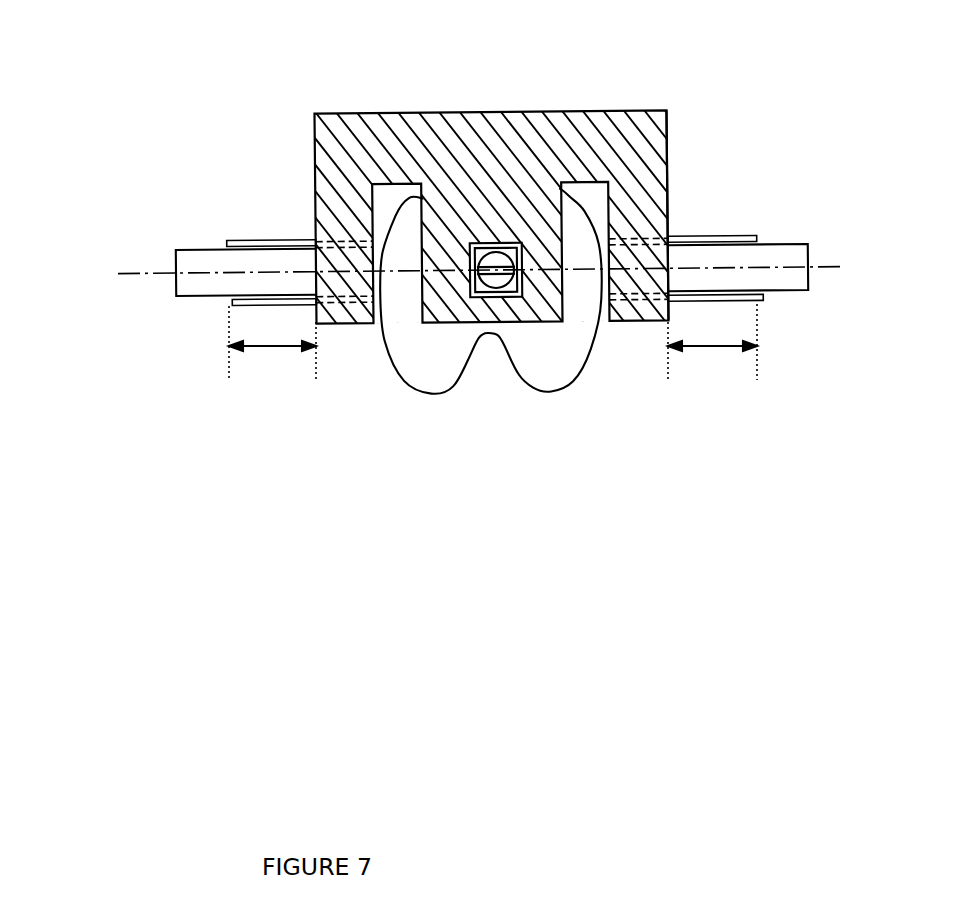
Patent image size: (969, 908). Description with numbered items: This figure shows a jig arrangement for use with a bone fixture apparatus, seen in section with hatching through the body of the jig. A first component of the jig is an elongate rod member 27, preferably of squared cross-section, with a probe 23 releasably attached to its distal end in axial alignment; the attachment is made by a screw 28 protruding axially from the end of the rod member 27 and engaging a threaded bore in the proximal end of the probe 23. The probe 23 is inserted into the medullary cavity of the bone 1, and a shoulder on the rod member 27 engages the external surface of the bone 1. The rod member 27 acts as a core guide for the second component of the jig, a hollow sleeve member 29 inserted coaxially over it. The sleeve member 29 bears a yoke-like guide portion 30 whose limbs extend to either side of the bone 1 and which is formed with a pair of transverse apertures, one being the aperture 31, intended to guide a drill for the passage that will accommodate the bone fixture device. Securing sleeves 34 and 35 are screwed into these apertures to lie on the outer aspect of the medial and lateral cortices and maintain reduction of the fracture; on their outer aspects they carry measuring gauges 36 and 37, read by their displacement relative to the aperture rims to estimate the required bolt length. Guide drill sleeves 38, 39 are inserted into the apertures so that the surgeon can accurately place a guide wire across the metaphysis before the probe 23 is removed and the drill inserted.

The bone 1 is at (570, 370).
The probe 23 is at (495, 262).
The rod member 27 is at (473, 295).
The screw 28 is at (505, 295).
The sleeve member 29 is at (503, 122).
The guide portion 30 is at (655, 140).
The aperture 31 is at (665, 200).
The securing sleeve 34 is at (745, 235).
The securing sleeve 35 is at (227, 240).
The measuring gauge 36 is at (715, 350).
The measuring gauge 37 is at (262, 353).
The guide drill sleeve 38 is at (800, 290).
The guide drill sleeve 39 is at (187, 283).